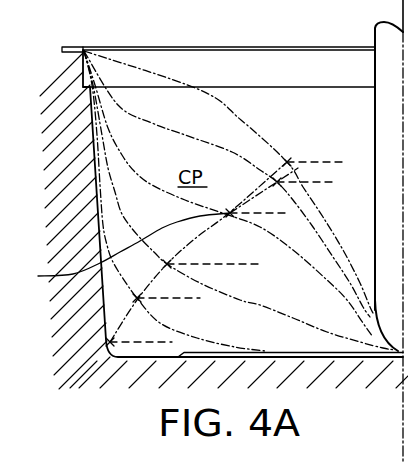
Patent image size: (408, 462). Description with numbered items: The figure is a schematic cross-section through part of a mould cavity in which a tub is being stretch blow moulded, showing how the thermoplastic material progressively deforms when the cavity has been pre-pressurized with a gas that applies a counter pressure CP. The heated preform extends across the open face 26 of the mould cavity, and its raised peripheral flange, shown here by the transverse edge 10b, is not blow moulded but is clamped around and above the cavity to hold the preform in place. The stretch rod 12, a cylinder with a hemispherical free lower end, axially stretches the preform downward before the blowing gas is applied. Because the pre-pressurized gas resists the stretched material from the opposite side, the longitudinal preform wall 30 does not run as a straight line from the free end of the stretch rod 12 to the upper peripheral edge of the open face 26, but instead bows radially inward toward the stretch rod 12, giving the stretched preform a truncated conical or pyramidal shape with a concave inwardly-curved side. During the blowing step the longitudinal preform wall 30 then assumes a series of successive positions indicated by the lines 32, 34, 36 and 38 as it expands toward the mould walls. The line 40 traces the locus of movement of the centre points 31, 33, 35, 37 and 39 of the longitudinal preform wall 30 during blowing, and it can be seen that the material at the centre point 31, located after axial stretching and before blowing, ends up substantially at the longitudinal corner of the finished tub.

The transverse edge 10b is at (70, 46).
The stretch rod 12 is at (386, 127).
The open face of the mould cavity 26 is at (231, 47).
The longitudinal preform wall 30 is at (241, 118).
The centre point of the longitudinal preform wall 31 is at (287, 162).
The line indicating a position of the longitudinal preform wall 32 is at (157, 122).
The centre point of the longitudinal preform wall 33 is at (277, 182).
The line indicating a position of the longitudinal preform wall 34 is at (120, 156).
The centre point of the longitudinal preform wall 35 is at (122, 251).
The line indicating a position of the longitudinal preform wall 36 is at (122, 214).
The centre point of the longitudinal preform wall 37 is at (167, 264).
The line indicating a position of the longitudinal preform wall 38 is at (118, 278).
The centre point of the longitudinal preform wall 39 is at (138, 300).
The locus line 40 is at (197, 237).